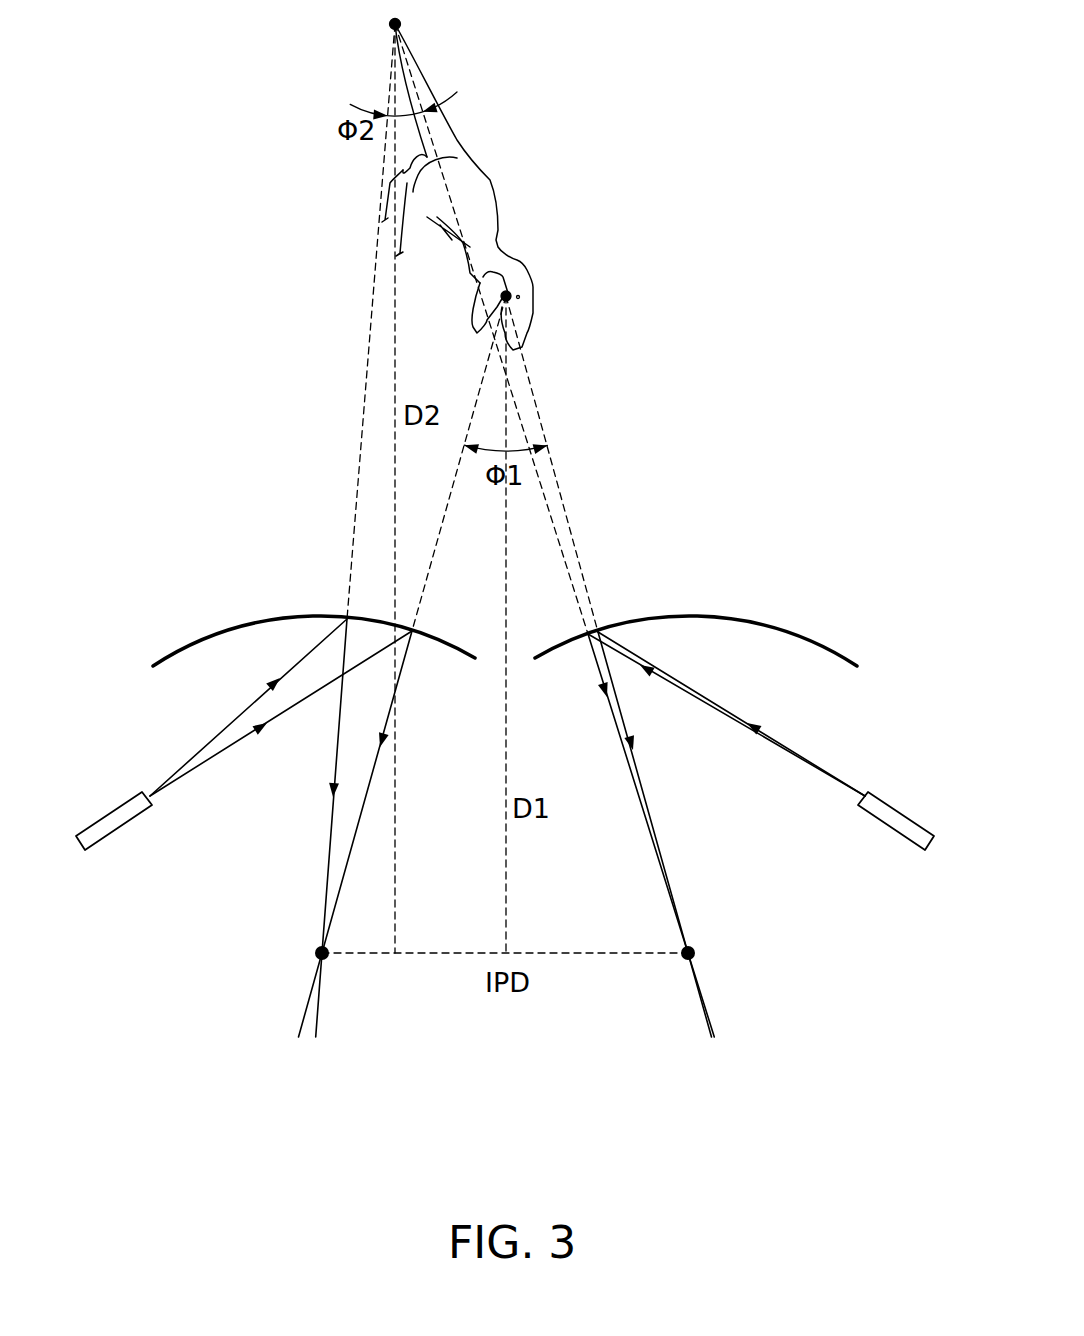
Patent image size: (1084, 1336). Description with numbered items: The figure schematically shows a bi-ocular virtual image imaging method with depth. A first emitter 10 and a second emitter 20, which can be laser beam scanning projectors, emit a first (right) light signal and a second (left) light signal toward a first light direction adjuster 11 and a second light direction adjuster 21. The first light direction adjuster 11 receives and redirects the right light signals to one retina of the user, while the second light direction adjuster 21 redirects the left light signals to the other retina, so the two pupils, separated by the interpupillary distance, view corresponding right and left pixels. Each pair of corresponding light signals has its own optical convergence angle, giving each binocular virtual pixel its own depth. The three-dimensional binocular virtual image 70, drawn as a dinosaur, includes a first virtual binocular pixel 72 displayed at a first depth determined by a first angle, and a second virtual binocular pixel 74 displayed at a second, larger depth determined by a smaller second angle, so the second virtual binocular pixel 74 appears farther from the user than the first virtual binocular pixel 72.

The first emitter 10 is at (903, 812).
The first light direction adjuster 11 is at (812, 640).
The second emitter 20 is at (108, 812).
The second light direction adjuster 21 is at (197, 640).
The 3D binocular virtual image 70 is at (490, 180).
The first virtual binocular pixel 72 is at (512, 296).
The second virtual binocular pixel 74 is at (401, 24).